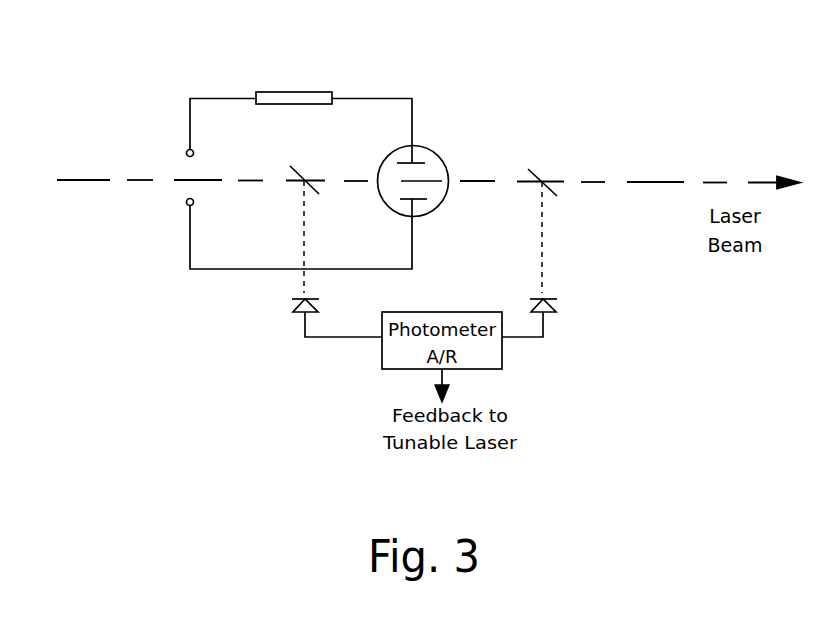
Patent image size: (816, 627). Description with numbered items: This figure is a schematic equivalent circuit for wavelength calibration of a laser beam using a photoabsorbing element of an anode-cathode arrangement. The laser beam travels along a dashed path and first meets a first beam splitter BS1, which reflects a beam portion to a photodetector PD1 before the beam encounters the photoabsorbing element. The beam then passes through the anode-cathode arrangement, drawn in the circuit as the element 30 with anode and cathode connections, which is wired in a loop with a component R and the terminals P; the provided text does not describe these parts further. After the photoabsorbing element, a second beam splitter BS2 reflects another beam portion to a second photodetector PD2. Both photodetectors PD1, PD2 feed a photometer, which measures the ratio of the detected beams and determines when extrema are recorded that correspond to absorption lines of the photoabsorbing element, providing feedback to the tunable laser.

The gas discharge tube (optogalvanic cell) with anode A and cathode C 30 is at (430, 138).
The ballast resistor R is at (294, 87).
The power supply terminals P is at (190, 177).
The first beam splitter BS1 is at (305, 217).
The second beam splitter BS2 is at (548, 217).
The photodetector PD1 is at (337, 314).
The second photodetector PD2 is at (551, 314).